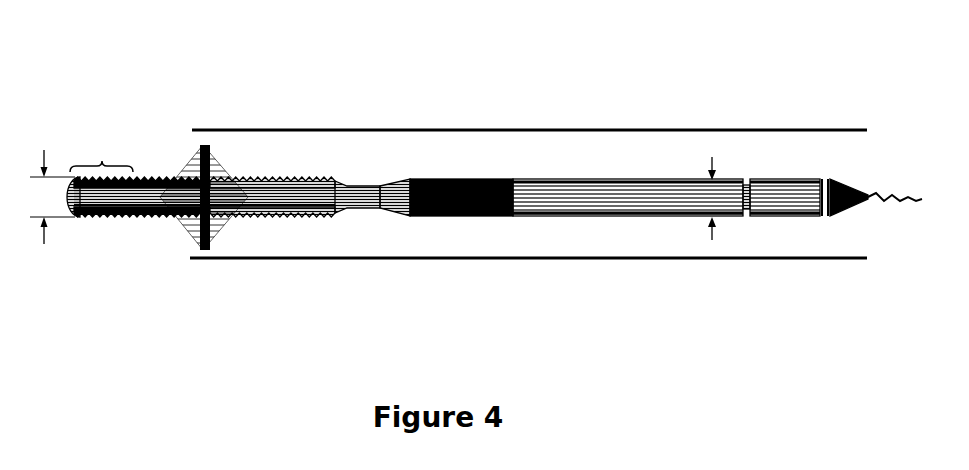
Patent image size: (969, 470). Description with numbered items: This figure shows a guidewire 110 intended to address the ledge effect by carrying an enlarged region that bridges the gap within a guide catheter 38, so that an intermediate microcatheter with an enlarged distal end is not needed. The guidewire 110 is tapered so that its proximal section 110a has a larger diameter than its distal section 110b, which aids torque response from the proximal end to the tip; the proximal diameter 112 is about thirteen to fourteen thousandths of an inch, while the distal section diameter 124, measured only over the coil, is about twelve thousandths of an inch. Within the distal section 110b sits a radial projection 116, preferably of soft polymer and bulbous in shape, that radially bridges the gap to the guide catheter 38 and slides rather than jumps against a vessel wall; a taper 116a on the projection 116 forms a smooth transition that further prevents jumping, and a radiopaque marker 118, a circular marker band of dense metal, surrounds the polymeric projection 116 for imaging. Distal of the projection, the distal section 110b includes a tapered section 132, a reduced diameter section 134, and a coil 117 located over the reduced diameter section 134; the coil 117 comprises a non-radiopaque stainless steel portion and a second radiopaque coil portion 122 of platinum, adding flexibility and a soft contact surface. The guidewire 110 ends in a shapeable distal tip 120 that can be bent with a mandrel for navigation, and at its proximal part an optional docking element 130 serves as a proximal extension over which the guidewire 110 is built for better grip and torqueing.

The guidewire 110 is at (475, 217).
The proximal section 110a is at (609, 170).
The distal section 110b is at (184, 276).
The proximal diameter 112 is at (707, 173).
The radial projection 116 is at (227, 173).
The taper 116a is at (185, 162).
The coil 117 is at (266, 220).
The radiopaque marker 118 is at (199, 140).
The shapeable distal tip 120 is at (101, 143).
The second radiopaque coil portion 122 is at (133, 219).
The distal section diameter 124 is at (51, 214).
The docking element 130 is at (868, 195).
The tapered section 132 is at (410, 188).
The reduced diameter section 134 is at (360, 190).
The guide catheter 38 is at (600, 263).